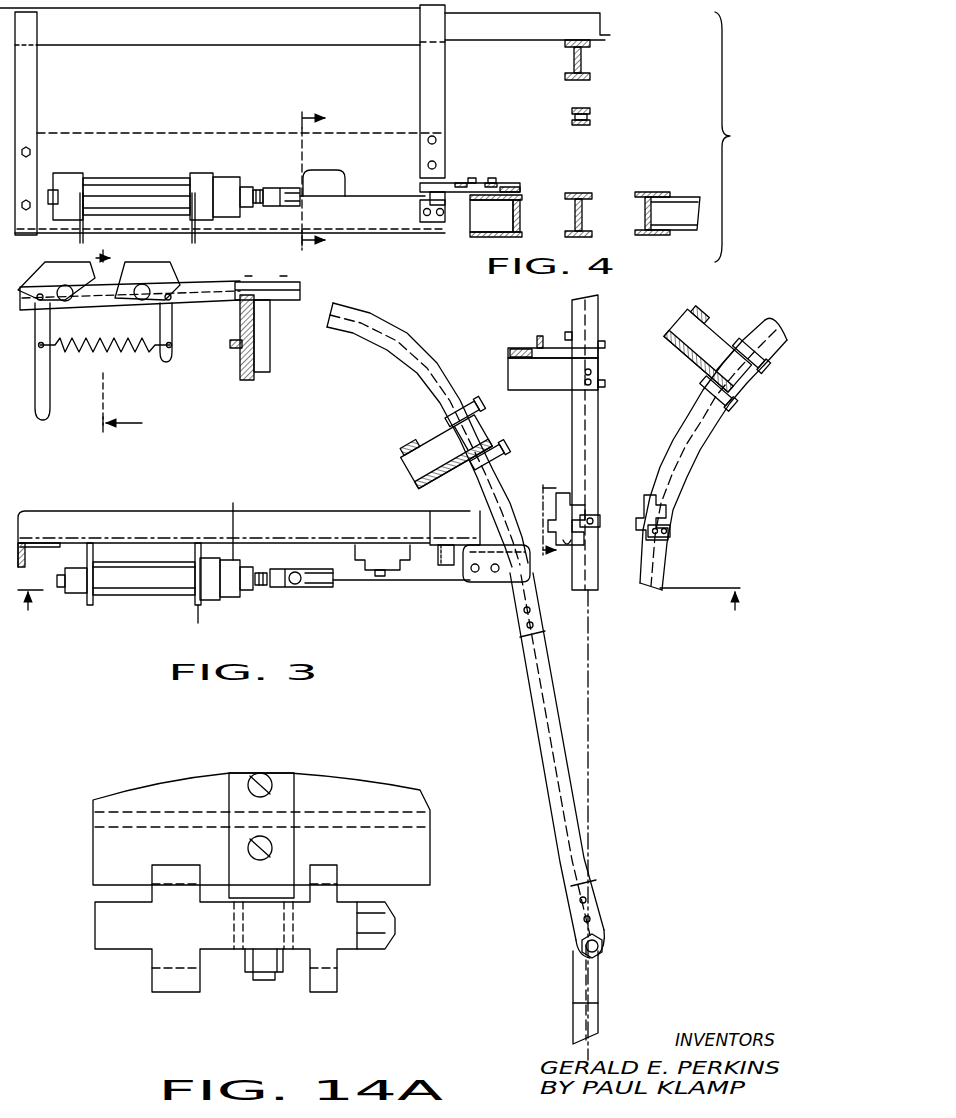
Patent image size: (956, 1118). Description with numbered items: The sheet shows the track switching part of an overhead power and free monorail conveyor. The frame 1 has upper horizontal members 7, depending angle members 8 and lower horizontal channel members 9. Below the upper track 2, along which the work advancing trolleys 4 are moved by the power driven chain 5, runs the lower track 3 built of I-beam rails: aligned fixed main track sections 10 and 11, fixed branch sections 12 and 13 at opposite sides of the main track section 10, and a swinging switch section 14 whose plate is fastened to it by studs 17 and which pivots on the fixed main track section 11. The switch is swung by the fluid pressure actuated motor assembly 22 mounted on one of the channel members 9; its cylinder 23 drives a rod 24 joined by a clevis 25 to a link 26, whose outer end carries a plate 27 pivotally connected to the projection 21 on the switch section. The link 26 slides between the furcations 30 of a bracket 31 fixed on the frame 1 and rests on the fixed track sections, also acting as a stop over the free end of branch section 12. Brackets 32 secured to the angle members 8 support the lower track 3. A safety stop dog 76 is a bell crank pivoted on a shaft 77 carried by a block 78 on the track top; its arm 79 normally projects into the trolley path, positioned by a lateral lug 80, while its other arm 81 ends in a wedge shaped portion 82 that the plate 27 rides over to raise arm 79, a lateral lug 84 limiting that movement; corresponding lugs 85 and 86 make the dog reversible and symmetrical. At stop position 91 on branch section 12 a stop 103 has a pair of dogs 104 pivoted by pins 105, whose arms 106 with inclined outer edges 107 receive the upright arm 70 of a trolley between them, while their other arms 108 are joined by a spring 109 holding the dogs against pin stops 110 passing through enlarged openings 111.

In FIG. 4, the frame 1 is at (610, 25).
In FIG. 4, the upper track 2 is at (592, 60).
In FIG. 3, the upper track 2 is at (600, 452).
In FIG. 4, the lower track 3 is at (591, 216).
In FIG. 3, the lower track 3 is at (600, 498).
In FIG. 3, the work advancing trolleys 4 is at (383, 611).
In FIG. 4, the power driven chain 5 is at (591, 117).
In FIG. 3, the power driven chain 5 is at (590, 712).
In FIG. 4, the upper horizontal members 7 is at (536, 30).
In FIG. 4, the angle members 8 is at (428, 70).
In FIG. 4, the lower horizontal channel members 9 is at (250, 140).
In FIG. 3, the lower horizontal channel members 9 is at (512, 529).
In FIG. 4, the fixed main track section 10 is at (595, 184).
In FIG. 3, the fixed main track section 10 is at (600, 572).
In FIG. 4, the fixed main track section 11 is at (119, 338).
In FIG. 3, the fixed main track section 11 is at (600, 968).
In FIG. 4, the fixed branch section 12 is at (521, 226).
In FIG. 3, the fixed branch section 12 is at (506, 488).
In FIG. 14A, the fixed branch section 12 is at (372, 793).
In FIG. 4, the fixed branch section 13 is at (672, 204).
In FIG. 3, the fixed branch section 13 is at (694, 472).
In FIG. 3, the swinging switch section 14 is at (520, 727).
In FIG. 3, the studs 17 is at (574, 884).
In FIG. 4, the projection 21 is at (521, 190).
In FIG. 4, the fluid pressure actuated motor assembly 22 is at (120, 196).
In FIG. 3, the fluid pressure actuated motor assembly 22 is at (170, 587).
In FIG. 4, the cylinder 23 is at (160, 194).
In FIG. 3, the cylinder 23 is at (115, 589).
In FIG. 4, the rod 24 is at (257, 190).
In FIG. 3, the rod 24 is at (263, 588).
In FIG. 4, the clevis 25 is at (278, 190).
In FIG. 3, the clevis 25 is at (282, 589).
In FIG. 4, the link 26 is at (392, 196).
In FIG. 3, the link 26 is at (402, 580).
In FIG. 4, the plate 27 is at (487, 184).
In FIG. 3, the plate 27 is at (486, 583).
In FIG. 4, the furcations 30 is at (445, 191).
In FIG. 3, the furcations 30 is at (444, 566).
In FIG. 4, the bracket 31 is at (433, 222).
In FIG. 3, the bracket 31 is at (432, 545).
In FIG. 4, the brackets 32 is at (248, 380).
In FIG. 3, the brackets 32 is at (400, 463).
In FIG. 4, the arm 70 is at (97, 265).
In FIG. 3, the safety stop dogs 76 is at (563, 492).
In FIG. 14A, the safety stop dogs 76 is at (112, 945).
In FIG. 14A, the shaft 77 is at (265, 978).
In FIG. 3, the block 78 is at (592, 520).
In FIG. 14A, the block 78 is at (293, 808).
In FIG. 14A, the arm 79 is at (138, 945).
In FIG. 3, the lateral lug 80 is at (665, 514).
In FIG. 14A, the lateral lug 80 is at (172, 875).
In FIG. 14A, the arm 81 is at (335, 936).
In FIG. 14A, the wedge shaped portion 82 is at (388, 935).
In FIG. 3, the lateral lug 84 is at (660, 541).
In FIG. 14A, the lateral lug 84 is at (335, 880).
In FIG. 3, the lateral lug 85 is at (645, 542).
In FIG. 14A, the lateral lug 85 is at (325, 984).
In FIG. 3, the lateral lug 86 is at (656, 498).
In FIG. 14A, the lateral lug 86 is at (184, 984).
In FIG. 4, the stop position 91 is at (165, 273).
In FIG. 4, the stop 103 is at (87, 301).
In FIG. 4, the dogs 104 is at (52, 375).
In FIG. 4, the pins 105 is at (40, 301).
In FIG. 4, the arms 106 is at (55, 283).
In FIG. 4, the outer edges 107 is at (75, 264).
In FIG. 4, the arms 108 is at (38, 412).
In FIG. 4, the spring 109 is at (125, 353).
In FIG. 4, the stops 110 is at (65, 302).
In FIG. 4, the openings 111 is at (68, 290).